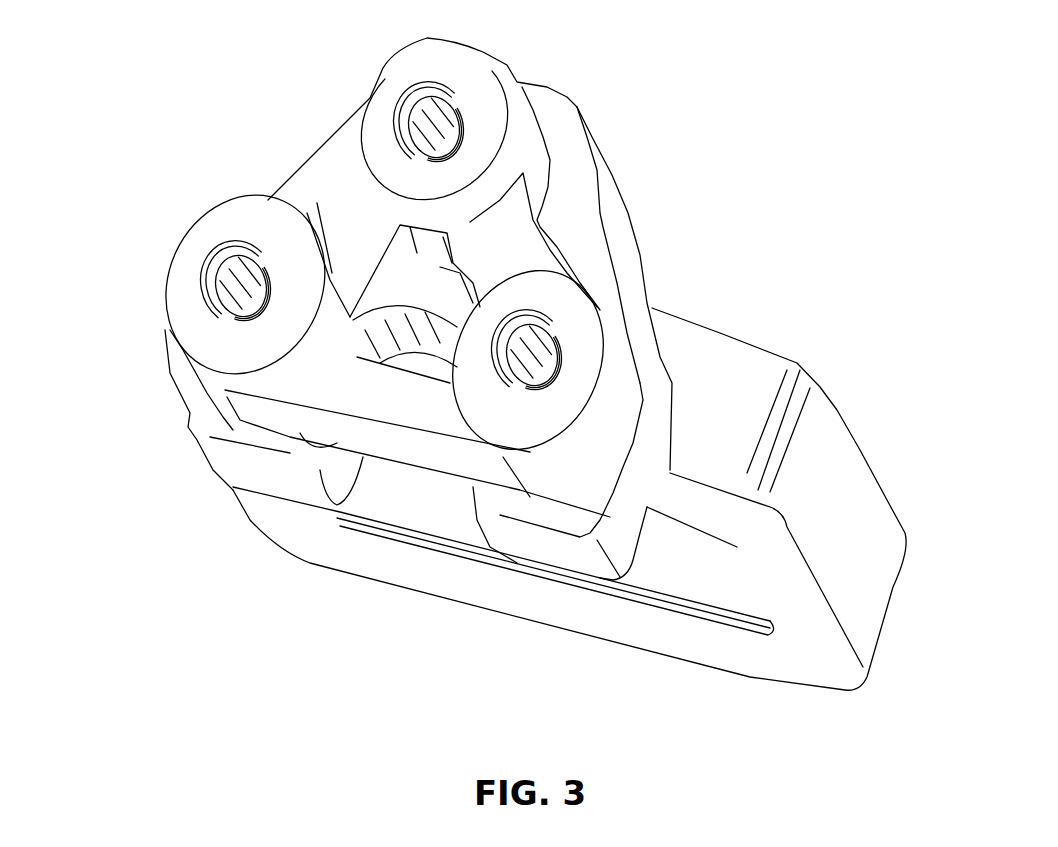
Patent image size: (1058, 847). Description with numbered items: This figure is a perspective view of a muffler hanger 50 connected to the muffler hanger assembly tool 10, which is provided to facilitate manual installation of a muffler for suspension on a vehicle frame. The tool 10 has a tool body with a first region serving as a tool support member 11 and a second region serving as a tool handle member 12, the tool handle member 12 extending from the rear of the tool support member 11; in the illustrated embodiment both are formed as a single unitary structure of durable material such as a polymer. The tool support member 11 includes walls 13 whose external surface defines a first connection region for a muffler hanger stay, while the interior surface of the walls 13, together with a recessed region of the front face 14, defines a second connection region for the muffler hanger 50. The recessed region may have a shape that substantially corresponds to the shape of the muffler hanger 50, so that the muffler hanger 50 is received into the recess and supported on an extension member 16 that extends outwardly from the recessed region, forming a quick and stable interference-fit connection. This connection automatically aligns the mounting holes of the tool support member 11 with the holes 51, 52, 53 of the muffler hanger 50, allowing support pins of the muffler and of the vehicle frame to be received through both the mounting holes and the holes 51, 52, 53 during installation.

The tool 10 is at (808, 204).
The tool support member 11 is at (210, 433).
The tool handle member 12 is at (872, 568).
The walls 13 is at (610, 220).
The front face 14 is at (587, 523).
The extension member 16 is at (425, 290).
The muffler hanger 50 is at (343, 210).
The hole of the muffler hanger 51 is at (434, 127).
The hole of the muffler hanger 52 is at (245, 282).
The hole of the muffler hanger 53 is at (540, 343).